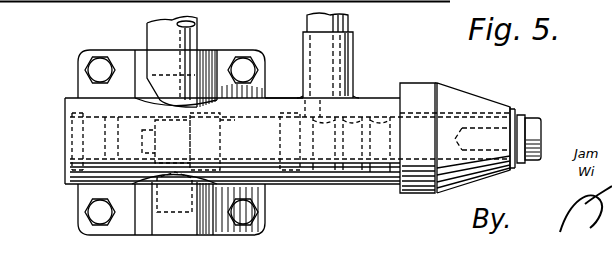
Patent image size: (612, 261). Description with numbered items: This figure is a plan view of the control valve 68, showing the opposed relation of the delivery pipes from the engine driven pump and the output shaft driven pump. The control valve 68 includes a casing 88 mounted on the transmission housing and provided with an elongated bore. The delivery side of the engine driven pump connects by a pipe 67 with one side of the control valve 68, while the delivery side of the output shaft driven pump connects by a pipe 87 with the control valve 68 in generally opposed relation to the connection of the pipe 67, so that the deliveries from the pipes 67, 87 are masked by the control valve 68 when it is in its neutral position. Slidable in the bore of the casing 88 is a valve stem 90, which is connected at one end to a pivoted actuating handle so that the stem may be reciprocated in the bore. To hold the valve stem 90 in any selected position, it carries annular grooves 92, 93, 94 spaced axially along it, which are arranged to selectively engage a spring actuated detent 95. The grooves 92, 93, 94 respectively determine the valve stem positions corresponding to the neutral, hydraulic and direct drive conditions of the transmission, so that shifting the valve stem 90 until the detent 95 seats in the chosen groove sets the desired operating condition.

The pipe 67 is at (260, 236).
The control valve 68 is at (378, 92).
The pipe 87 is at (198, 37).
The casing 88 is at (279, 96).
The valve stem 90 is at (463, 110).
The annular groove 92 is at (325, 168).
The annular groove 93 is at (352, 168).
The annular groove 94 is at (383, 185).
The spring actuated detent 95 is at (350, 21).